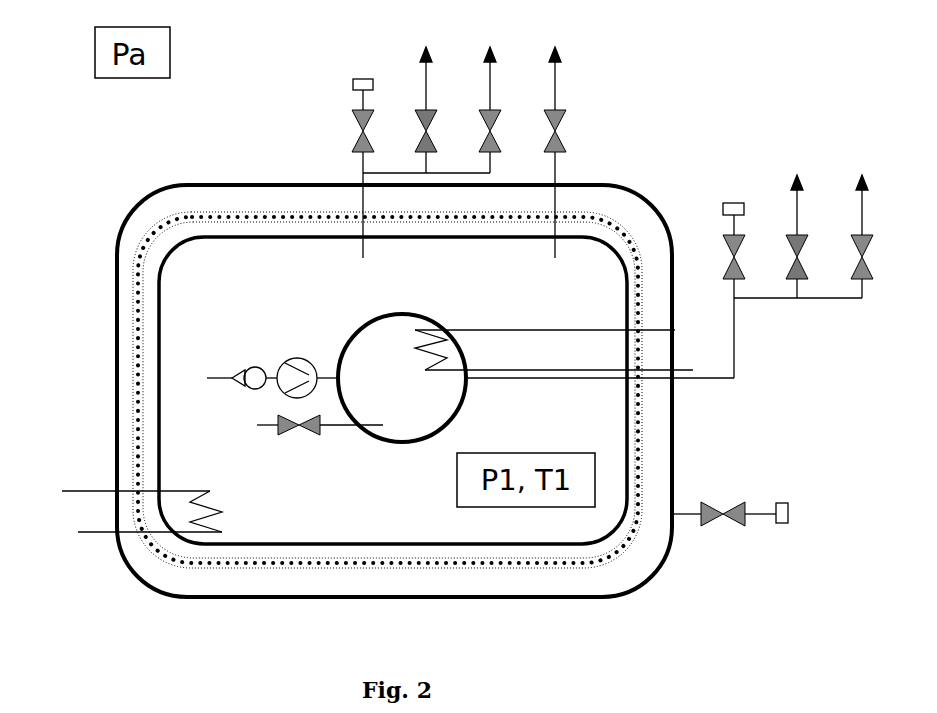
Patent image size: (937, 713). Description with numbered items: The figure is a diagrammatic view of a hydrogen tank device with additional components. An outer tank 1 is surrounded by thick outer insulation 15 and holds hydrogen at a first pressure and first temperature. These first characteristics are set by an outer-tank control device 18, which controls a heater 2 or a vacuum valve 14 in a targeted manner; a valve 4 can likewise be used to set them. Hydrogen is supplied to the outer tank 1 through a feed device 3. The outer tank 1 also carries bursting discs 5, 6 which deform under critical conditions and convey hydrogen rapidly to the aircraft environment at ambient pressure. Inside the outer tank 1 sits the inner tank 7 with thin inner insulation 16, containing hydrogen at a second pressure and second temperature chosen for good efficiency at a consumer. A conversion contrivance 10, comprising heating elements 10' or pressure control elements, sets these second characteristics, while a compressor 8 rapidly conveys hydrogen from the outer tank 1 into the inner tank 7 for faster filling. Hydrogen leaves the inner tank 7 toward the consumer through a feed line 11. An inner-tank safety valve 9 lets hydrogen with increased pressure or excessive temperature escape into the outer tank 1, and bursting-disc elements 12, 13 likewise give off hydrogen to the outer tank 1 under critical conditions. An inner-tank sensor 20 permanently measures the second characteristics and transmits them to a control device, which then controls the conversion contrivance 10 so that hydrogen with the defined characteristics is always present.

The outer tank 1 is at (378, 391).
The heater 2 is at (115, 516).
The feed device 3 is at (421, 168).
The valve 4 is at (436, 110).
The bursting disc 5 is at (501, 110).
The bursting disc 6 is at (565, 152).
The inner tank 7 is at (402, 352).
The compressor 8 is at (272, 364).
The inner-tank safety valve 9 is at (320, 435).
The conversion contrivance 10 is at (575, 340).
The heating element 10' is at (575, 340).
The feed line 11 is at (792, 290).
The bursting-disc element 12 is at (807, 236).
The bursting-disc element 13 is at (871, 236).
The vacuum valve 14 is at (730, 504).
The outer insulation 15 is at (130, 274).
The inner insulation 16 is at (398, 307).
The outer-tank control device 18 is at (115, 516).
The inner-tank sensor 20 is at (409, 350).